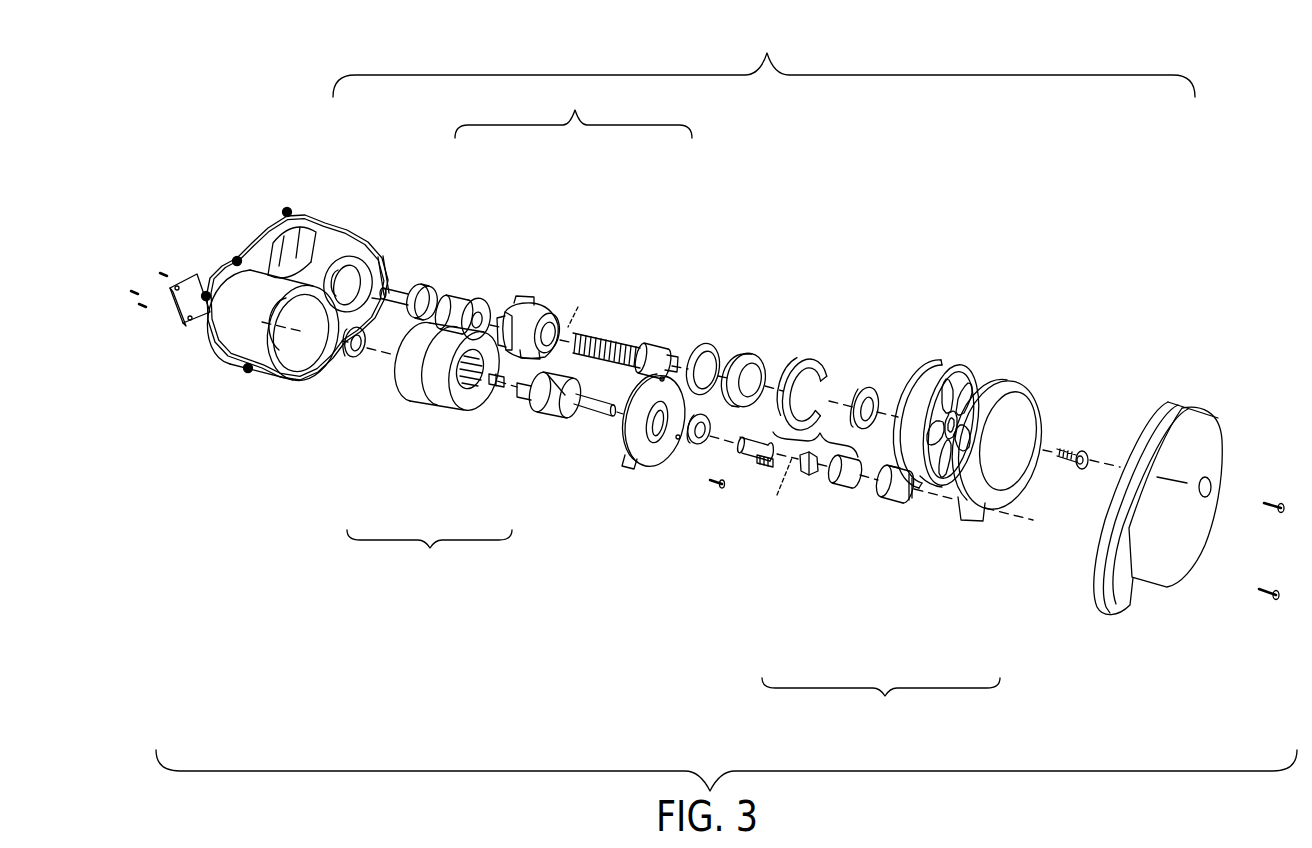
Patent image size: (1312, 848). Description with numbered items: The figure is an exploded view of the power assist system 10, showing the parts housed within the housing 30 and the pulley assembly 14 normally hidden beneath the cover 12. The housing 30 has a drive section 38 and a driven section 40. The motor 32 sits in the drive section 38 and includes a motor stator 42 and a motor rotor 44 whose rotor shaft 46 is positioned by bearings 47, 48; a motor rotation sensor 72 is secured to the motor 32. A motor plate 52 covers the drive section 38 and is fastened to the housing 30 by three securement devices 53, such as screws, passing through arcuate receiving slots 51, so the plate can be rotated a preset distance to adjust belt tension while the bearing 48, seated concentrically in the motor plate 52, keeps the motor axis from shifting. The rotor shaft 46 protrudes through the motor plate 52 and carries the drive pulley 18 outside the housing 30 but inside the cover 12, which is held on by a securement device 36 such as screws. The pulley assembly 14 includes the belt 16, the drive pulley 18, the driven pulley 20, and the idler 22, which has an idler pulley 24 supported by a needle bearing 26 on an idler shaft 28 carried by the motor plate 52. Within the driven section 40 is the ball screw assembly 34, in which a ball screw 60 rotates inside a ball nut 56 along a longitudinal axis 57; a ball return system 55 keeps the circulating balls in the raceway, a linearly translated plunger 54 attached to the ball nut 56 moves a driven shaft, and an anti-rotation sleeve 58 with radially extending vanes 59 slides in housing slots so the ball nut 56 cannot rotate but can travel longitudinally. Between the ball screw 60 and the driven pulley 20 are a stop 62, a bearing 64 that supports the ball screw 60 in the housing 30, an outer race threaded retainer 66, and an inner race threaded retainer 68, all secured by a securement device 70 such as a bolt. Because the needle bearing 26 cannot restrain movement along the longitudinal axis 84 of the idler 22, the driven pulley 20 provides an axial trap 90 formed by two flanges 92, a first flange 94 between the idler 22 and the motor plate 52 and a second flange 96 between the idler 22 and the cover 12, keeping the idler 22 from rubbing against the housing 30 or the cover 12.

The drive assembly 10 is at (764, 59).
The cover 12 is at (1123, 615).
The pulley assembly 14 is at (881, 702).
The belt 16 is at (960, 522).
The drive pulley 18 is at (905, 557).
The driven pulley 20 is at (969, 438).
The idler 22 is at (815, 433).
The idler pulley 24 is at (843, 485).
The needle bearing 26 is at (808, 477).
The idler shaft 28 is at (753, 458).
The housing 30 is at (296, 281).
The motor 32 is at (429, 554).
The ball screw assembly 34 is at (573, 108).
The securement device 36 is at (1261, 592).
The drive section 38 is at (237, 338).
The driven section 40 is at (306, 248).
The motor stator 42 is at (420, 395).
The motor rotor 44 is at (548, 403).
The rotor shaft 46 is at (582, 408).
The bearing 47 is at (349, 355).
The bearing 48 is at (697, 445).
The securement device receiving slots 51 is at (627, 460).
The motor plate 52 is at (615, 485).
The securement devices 53 is at (715, 487).
The plunger 54 is at (402, 293).
The ball return system 55 is at (470, 307).
The ball nut 56 is at (455, 296).
The longitudinal axis 57 is at (579, 302).
The anti-rotation sleeve 58 is at (552, 281).
The vanes 59 is at (523, 300).
The ball screw 60 is at (630, 340).
The stop 62 is at (708, 345).
The bearing 64 is at (747, 348).
The outer race threaded retainer 66 is at (817, 363).
The inner race threaded retainer 68 is at (872, 428).
The securement device 70 is at (1087, 445).
The motor rotation sensor 72 is at (187, 325).
The longitudinal axis 84 is at (782, 491).
The axial trap 90 is at (940, 362).
The flanges 92 is at (973, 385).
The first flange 94 is at (882, 476).
The second flange 96 is at (927, 485).